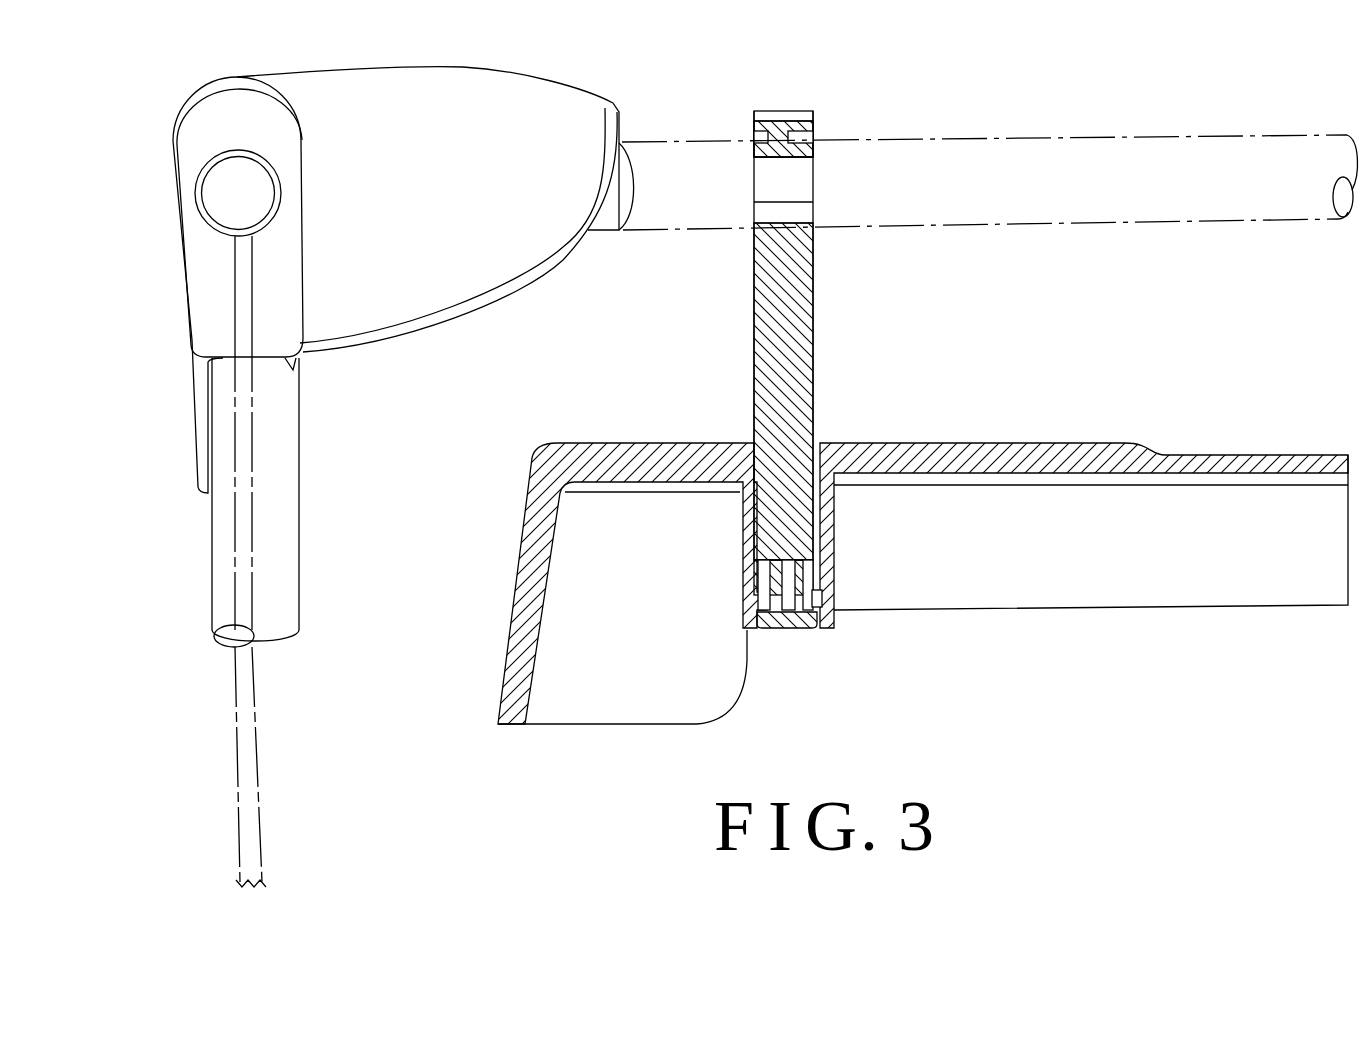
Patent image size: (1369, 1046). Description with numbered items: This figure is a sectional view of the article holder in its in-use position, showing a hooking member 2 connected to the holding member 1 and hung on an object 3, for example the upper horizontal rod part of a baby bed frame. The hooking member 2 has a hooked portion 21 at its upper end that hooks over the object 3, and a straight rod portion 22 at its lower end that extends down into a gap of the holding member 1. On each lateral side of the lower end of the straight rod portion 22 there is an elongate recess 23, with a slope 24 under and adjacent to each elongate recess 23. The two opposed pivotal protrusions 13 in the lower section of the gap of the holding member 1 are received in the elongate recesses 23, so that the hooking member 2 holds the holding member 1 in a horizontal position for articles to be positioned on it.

The holding member 1 is at (1080, 438).
The hooking member 2 is at (823, 312).
The object 3 is at (1090, 133).
The pivotal protrusion 13 is at (835, 608).
The hooked portion 21 is at (780, 111).
The straight rod portion 22 is at (815, 383).
The elongate recess 23 is at (812, 573).
The slope 24 is at (780, 617).